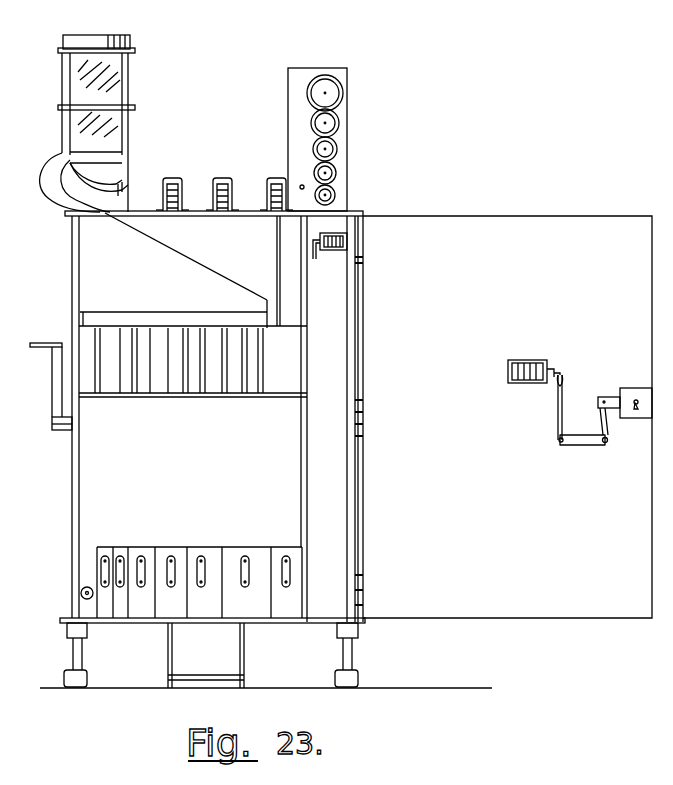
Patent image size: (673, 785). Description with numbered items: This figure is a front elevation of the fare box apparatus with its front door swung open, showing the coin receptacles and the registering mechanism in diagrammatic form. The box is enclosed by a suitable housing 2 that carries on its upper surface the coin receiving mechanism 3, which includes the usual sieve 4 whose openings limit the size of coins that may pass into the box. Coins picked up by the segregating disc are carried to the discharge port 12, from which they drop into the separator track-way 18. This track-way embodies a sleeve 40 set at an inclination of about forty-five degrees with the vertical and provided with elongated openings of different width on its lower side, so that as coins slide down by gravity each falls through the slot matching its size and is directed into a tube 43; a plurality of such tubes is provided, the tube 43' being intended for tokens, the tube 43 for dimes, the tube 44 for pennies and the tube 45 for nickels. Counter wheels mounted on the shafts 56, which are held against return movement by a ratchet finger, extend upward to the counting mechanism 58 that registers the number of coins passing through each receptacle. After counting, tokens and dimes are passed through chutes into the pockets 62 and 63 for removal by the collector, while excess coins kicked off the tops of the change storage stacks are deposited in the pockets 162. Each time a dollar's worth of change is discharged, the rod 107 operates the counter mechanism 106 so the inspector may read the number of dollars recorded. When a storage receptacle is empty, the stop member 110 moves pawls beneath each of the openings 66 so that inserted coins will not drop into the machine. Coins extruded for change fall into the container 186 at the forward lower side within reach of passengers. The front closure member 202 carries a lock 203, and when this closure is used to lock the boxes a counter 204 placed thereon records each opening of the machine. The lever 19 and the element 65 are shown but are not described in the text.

The housing 2 is at (339, 223).
The coin receiving mechanism 3 is at (128, 90).
The sieve 4 is at (133, 46).
The discharge port 12 is at (42, 172).
The separator track-way 18 is at (90, 262).
The lever 19 is at (55, 375).
The sleeve 40 is at (193, 270).
The tube for tokens 43' is at (193, 374).
The tube 43 is at (150, 374).
The tube for pennies 44 is at (188, 397).
The tube for nickels 45 is at (247, 397).
The shaft 56 is at (277, 255).
The counting mechanism 58 is at (220, 184).
The pocket 62 is at (105, 552).
The pocket 63 is at (138, 552).
The indicator lamps 65 is at (340, 127).
The openings 66 is at (338, 92).
The counter mechanism 106 is at (347, 242).
The rod 107 is at (318, 258).
The stop member 110 is at (301, 185).
The pockets 162 is at (174, 552).
The container 186 is at (234, 658).
The front closure member 202 is at (483, 615).
The lock 203 is at (642, 420).
The counter 204 is at (538, 384).